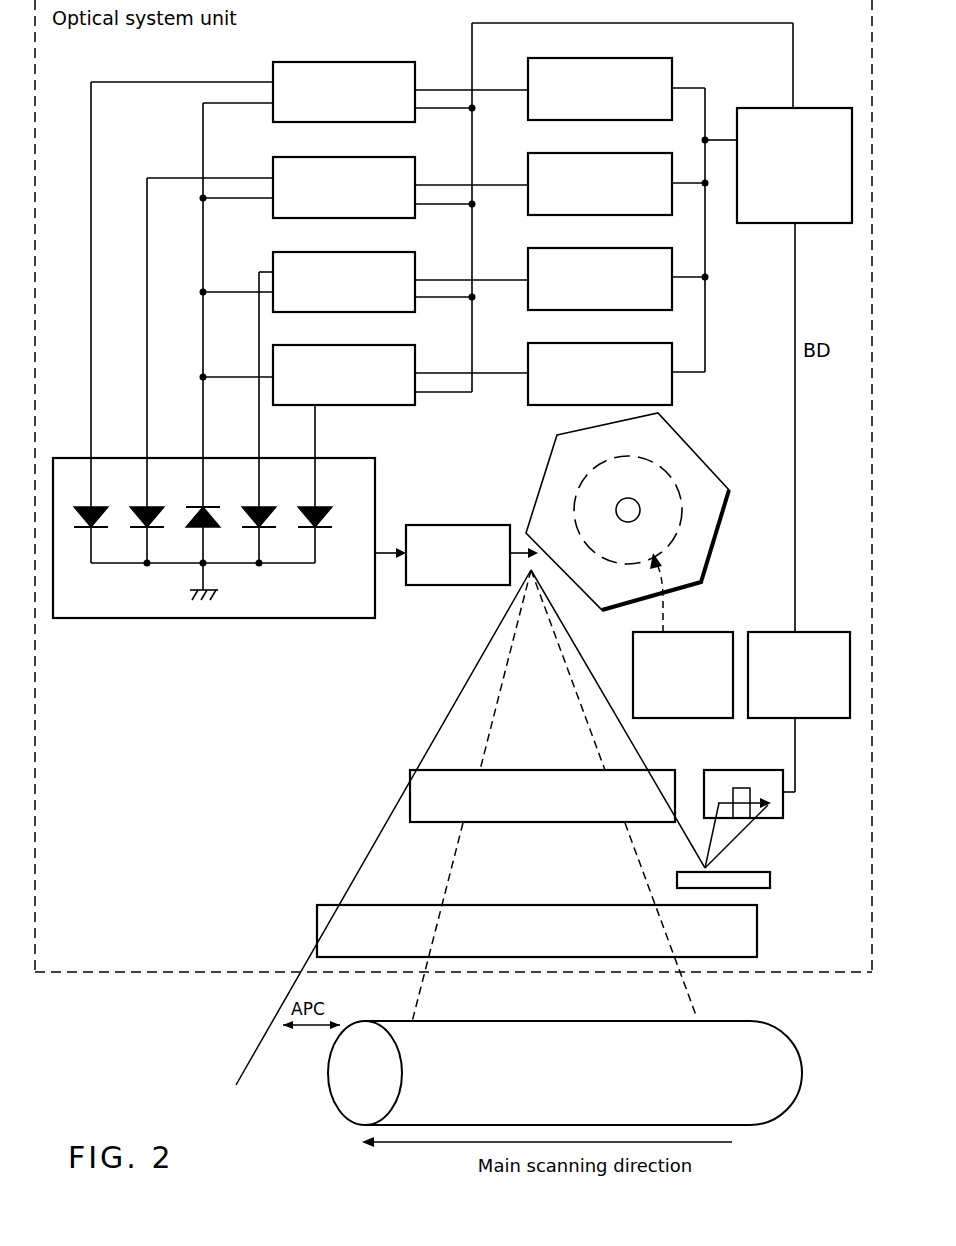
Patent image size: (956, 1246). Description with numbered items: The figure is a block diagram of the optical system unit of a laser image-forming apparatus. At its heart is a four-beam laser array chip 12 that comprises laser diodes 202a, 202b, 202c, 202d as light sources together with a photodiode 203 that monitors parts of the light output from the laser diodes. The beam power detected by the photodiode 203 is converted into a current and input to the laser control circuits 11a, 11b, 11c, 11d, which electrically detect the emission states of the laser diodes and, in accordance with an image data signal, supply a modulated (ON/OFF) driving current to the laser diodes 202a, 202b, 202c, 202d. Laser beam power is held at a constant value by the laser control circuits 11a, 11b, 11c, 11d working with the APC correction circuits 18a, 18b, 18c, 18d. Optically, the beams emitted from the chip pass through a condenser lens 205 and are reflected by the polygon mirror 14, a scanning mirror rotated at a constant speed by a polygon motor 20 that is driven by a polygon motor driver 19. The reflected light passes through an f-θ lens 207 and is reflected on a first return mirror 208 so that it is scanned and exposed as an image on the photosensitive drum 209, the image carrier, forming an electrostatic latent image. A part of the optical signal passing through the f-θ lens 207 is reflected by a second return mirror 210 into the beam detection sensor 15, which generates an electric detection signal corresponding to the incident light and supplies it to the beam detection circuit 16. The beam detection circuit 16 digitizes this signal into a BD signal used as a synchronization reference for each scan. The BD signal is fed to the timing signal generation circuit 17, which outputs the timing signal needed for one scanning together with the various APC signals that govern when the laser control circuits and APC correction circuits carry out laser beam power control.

The laser control circuit (a) 11a is at (352, 62).
The laser control circuit (b) 11b is at (352, 157).
The laser control circuit (c) 11c is at (352, 252).
The laser control circuit (d) 11d is at (352, 345).
The APC correction circuit (a) 18a is at (610, 58).
The APC correction circuit (b) 18b is at (610, 153).
The APC correction circuit (c) 18c is at (610, 248).
The APC correction circuit (d) 18d is at (610, 343).
The timing signal generation circuit 17 is at (800, 108).
The laser array chip 12 is at (214, 559).
The laser diode 202a is at (99, 507).
The laser diode 202b is at (155, 507).
The laser diode 202c is at (267, 507).
The laser diode 202d is at (323, 507).
The photodiode 203 is at (211, 507).
The condenser lens 205 is at (450, 525).
The polygon mirror 14 is at (693, 447).
The polygon motor 20 is at (682, 488).
The polygon motor driver 19 is at (695, 632).
The beam detection circuit 16 is at (810, 632).
The beam detection sensor 15 is at (745, 770).
The f-θ lens 207 is at (517, 770).
The second return mirror 210 is at (738, 872).
The first return mirror 208 is at (517, 905).
The photosensitive drum 209 is at (522, 1021).